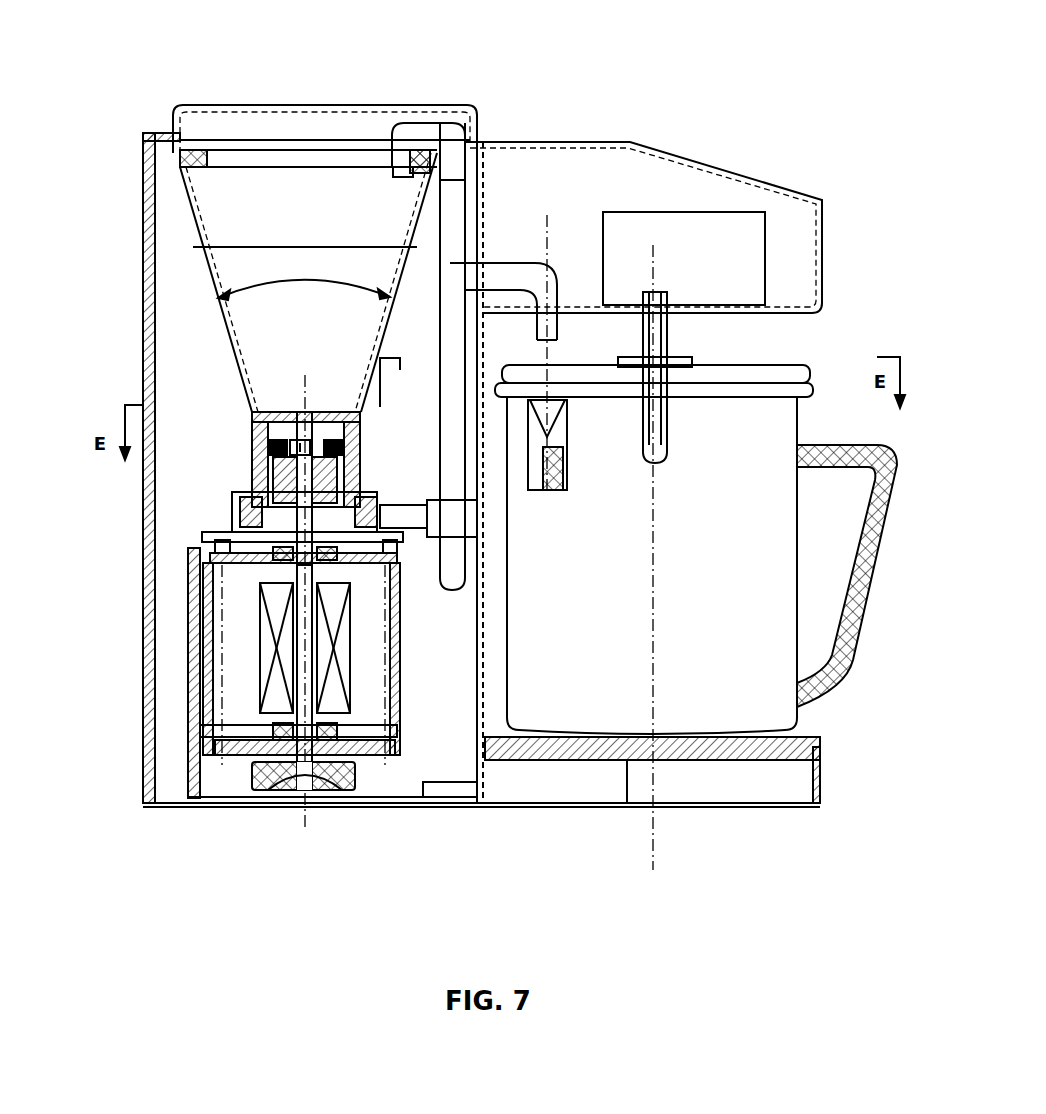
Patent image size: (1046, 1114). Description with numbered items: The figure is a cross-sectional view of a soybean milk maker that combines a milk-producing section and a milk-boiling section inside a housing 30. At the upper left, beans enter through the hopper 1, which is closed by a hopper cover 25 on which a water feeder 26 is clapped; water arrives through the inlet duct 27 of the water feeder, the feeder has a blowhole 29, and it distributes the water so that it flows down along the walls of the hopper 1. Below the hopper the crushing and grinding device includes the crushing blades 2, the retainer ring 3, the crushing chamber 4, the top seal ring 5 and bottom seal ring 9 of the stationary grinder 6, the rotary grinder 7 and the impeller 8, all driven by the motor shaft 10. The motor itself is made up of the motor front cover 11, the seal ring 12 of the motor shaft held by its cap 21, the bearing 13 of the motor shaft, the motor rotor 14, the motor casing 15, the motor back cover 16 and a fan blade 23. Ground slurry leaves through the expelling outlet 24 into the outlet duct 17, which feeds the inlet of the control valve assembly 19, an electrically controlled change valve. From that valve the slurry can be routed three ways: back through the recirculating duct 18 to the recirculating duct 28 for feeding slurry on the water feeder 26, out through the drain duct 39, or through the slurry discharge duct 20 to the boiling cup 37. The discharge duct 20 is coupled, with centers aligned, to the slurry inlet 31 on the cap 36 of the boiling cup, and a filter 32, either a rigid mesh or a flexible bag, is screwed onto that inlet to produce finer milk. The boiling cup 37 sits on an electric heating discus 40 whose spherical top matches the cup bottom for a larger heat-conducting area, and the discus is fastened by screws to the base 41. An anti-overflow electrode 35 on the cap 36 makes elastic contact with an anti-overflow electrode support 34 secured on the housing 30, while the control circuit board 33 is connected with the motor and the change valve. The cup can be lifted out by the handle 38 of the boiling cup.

The hopper 1 is at (180, 200).
The crushing blade 2 is at (300, 468).
The retainer ring 3 is at (262, 418).
The crushing chamber 4 is at (268, 445).
The top seal ring of the stationary grinder 5 is at (275, 490).
The stationary grinder 6 is at (276, 503).
The rotary grinder 7 is at (282, 520).
The impeller 8 is at (258, 535).
The bottom seal ring of the stationary grinder 9 is at (256, 548).
The motor shaft 10 is at (325, 572).
The motor front cover 11 is at (233, 573).
The seal ring of the motor shaft 12 is at (238, 560).
The bearing of the motor shaft 13 is at (300, 563).
The motor rotor 14 is at (278, 607).
The motor casing 15 is at (200, 625).
The motor back cover 16 is at (280, 740).
The outlet duct 17 is at (393, 513).
The recirculating duct 18 is at (458, 207).
The control valve assembly 19 is at (453, 517).
The slurry discharge duct 20 is at (502, 275).
The cap for the seal ring of the motor shaft 21 is at (330, 580).
The fan blade 23 is at (252, 768).
The expelling outlet 24 is at (342, 420).
The hopper cover 25 is at (178, 107).
The water feeder 26 is at (150, 140).
The inlet duct of the water feeder 27 is at (396, 150).
The recirculating duct for feeding slurry 28 is at (415, 160).
The blowhole of the water feeder 29 is at (470, 265).
The housing 30 is at (543, 140).
The slurry inlet 31 is at (556, 355).
The filter 32 is at (562, 395).
The control circuit board 33 is at (635, 250).
The anti-overflow electrode support 34 is at (693, 378).
The anti-overflow electrode 35 is at (722, 377).
The cap of the boiling cup 36 is at (738, 527).
The boiling cup 37 is at (820, 207).
The handle of the boiling cup 38 is at (855, 650).
The drain duct 39 is at (450, 568).
The electric heating discus 40 is at (577, 757).
The base 41 is at (810, 757).